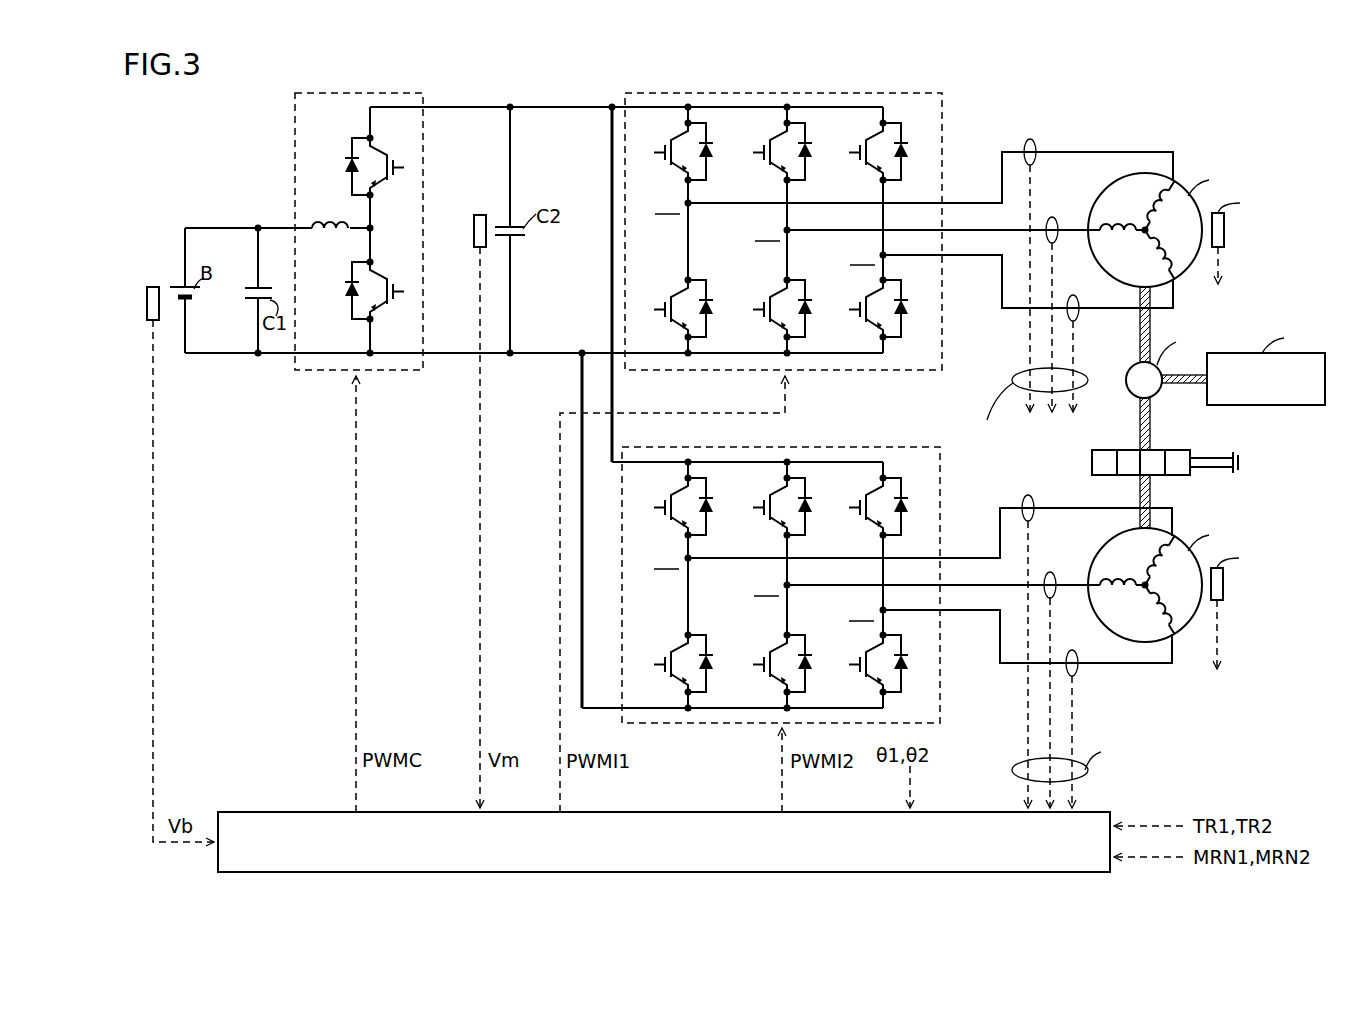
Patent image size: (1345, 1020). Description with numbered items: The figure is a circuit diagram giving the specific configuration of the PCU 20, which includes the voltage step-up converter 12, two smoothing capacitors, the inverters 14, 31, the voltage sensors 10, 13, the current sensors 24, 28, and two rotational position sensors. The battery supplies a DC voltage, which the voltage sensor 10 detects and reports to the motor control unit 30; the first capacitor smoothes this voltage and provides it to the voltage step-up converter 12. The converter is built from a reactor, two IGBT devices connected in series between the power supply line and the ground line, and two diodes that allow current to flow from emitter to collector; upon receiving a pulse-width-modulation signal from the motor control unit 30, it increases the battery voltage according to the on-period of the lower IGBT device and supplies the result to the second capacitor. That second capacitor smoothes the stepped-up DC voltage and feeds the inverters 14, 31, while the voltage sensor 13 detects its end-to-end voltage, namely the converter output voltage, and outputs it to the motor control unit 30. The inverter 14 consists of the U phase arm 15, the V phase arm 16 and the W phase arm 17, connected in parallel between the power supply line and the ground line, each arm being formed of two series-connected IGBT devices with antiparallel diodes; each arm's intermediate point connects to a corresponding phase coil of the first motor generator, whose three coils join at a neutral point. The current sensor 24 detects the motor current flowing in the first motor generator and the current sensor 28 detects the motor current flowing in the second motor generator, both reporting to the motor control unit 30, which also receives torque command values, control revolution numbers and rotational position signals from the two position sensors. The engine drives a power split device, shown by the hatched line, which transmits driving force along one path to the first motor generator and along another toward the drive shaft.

The voltage sensor 10 is at (153, 287).
The voltage step-up converter 12 is at (365, 93).
The voltage sensor 13 is at (480, 215).
The inverter 14 is at (850, 93).
The U phase arm 15 is at (913, 361).
The V phase arm 16 is at (927, 407).
The W phase arm 17 is at (1011, 452).
The PCU 20 is at (1151, 103).
The current sensor 24 is at (1073, 295).
The current sensor 28 is at (1072, 650).
The motor control unit 30 is at (1062, 872).
The inverter 31 is at (848, 447).